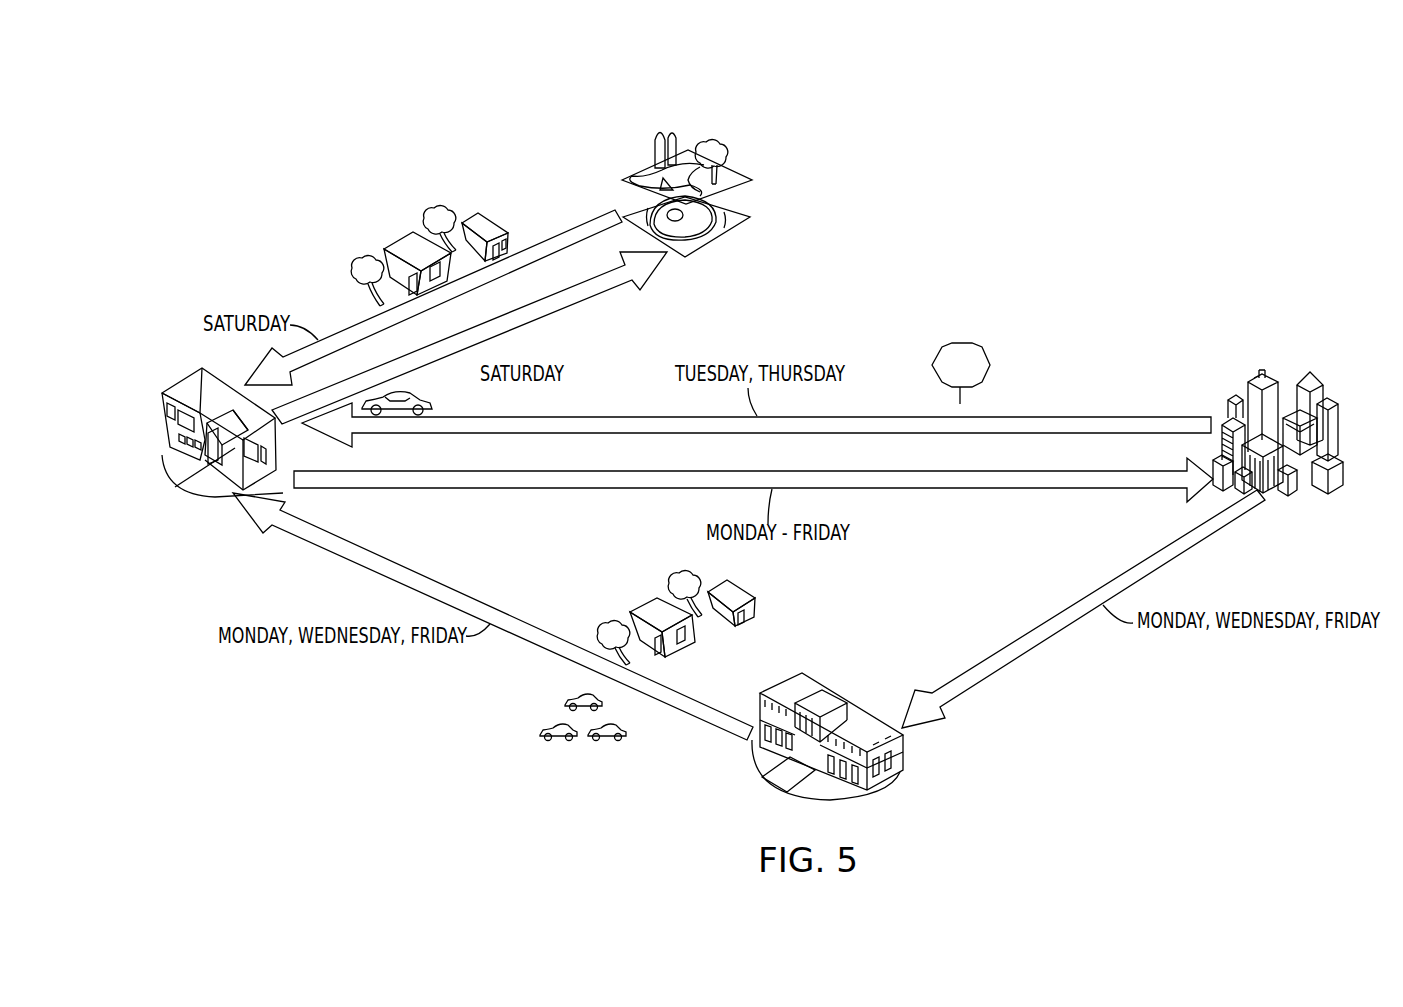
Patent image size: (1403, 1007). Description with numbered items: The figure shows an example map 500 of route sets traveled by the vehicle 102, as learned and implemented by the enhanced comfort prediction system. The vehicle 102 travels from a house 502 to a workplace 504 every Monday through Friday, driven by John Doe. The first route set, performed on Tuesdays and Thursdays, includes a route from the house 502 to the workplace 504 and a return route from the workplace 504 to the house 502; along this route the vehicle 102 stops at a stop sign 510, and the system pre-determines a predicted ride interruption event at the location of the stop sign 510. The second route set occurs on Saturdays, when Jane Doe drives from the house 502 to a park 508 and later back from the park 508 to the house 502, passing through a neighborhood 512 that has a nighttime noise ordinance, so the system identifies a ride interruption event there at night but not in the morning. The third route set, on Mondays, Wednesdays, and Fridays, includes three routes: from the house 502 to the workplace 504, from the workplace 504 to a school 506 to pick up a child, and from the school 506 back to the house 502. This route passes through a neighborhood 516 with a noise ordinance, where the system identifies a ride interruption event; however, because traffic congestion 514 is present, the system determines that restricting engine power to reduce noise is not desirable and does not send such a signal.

The map 500 is at (200, 128).
The house 502 is at (196, 312).
The workplace 504 is at (1338, 421).
The school 506 is at (907, 758).
The park 508 is at (684, 145).
The stop sign 510 is at (983, 353).
The neighborhood 512 is at (400, 230).
The traffic congestion 514 is at (578, 752).
The neighborhood 516 is at (650, 593).
The vehicle 102 is at (418, 402).